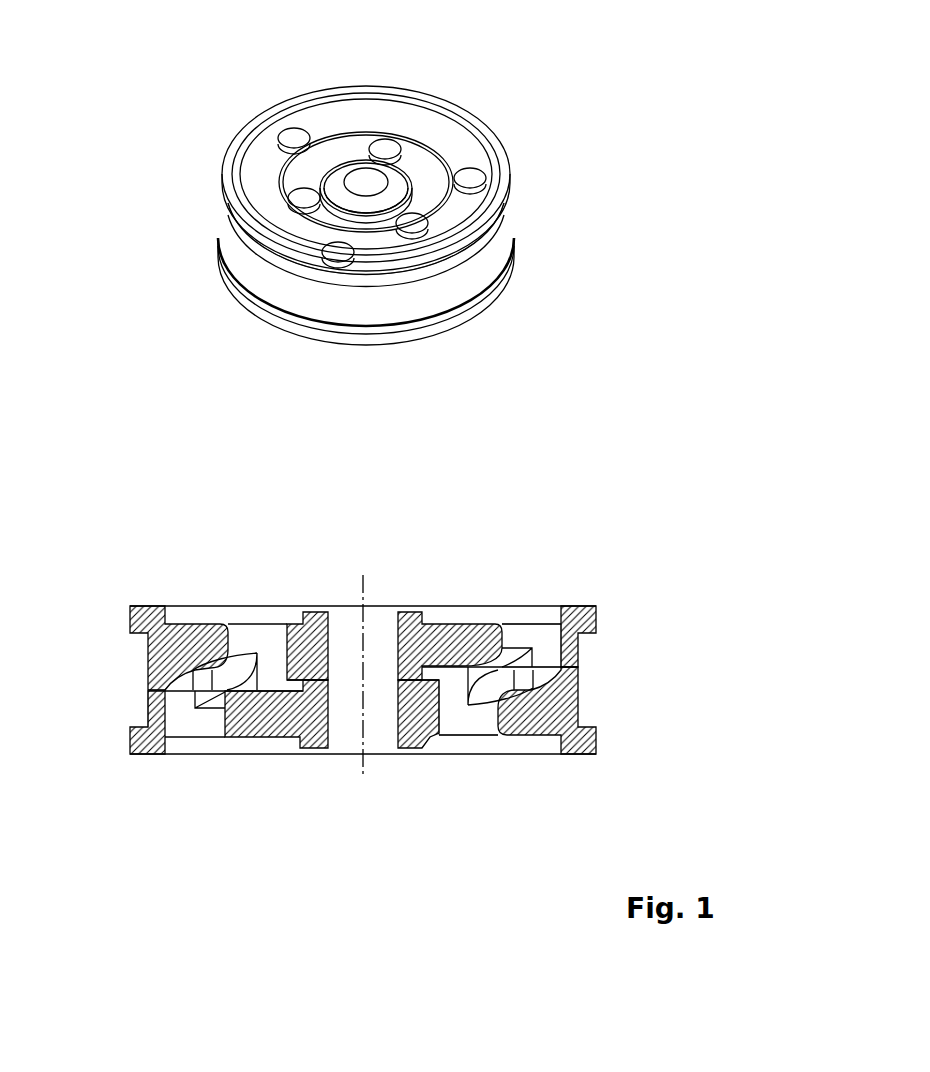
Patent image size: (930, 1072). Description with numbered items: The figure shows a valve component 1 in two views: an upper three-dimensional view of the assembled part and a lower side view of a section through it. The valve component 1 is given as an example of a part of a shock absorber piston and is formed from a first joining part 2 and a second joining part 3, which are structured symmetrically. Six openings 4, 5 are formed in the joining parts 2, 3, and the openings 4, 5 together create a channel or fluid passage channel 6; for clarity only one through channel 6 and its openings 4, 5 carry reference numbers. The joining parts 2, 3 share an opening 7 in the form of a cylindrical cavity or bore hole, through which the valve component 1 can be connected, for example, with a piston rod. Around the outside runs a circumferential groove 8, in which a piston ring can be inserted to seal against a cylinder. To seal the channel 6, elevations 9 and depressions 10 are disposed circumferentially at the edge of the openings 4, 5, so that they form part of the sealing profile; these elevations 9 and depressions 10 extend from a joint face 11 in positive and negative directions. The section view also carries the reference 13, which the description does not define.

The valve component 1 is at (233, 120).
The first joining part 2 is at (472, 123).
The second joining part 3 is at (482, 282).
The opening 4 is at (472, 178).
The opening 5 is at (460, 703).
The channel 6 is at (508, 670).
The opening 7 is at (366, 583).
The circumferential groove 8 is at (252, 272).
The elevation 9 is at (567, 670).
The depression 10 is at (157, 688).
The joint face 11 is at (325, 678).
The outer wall 13 is at (150, 712).